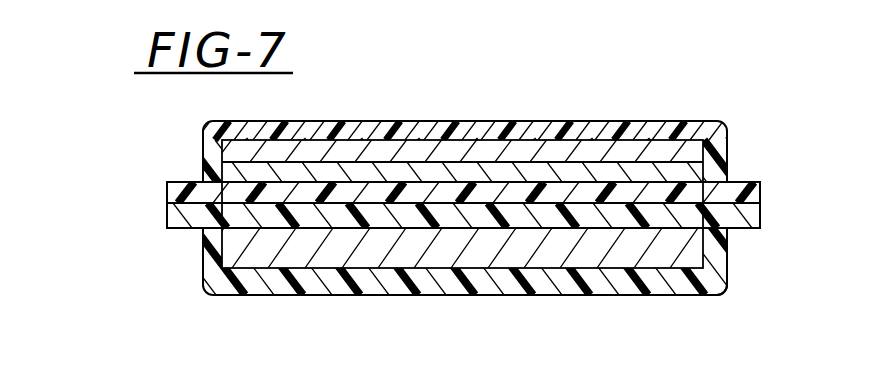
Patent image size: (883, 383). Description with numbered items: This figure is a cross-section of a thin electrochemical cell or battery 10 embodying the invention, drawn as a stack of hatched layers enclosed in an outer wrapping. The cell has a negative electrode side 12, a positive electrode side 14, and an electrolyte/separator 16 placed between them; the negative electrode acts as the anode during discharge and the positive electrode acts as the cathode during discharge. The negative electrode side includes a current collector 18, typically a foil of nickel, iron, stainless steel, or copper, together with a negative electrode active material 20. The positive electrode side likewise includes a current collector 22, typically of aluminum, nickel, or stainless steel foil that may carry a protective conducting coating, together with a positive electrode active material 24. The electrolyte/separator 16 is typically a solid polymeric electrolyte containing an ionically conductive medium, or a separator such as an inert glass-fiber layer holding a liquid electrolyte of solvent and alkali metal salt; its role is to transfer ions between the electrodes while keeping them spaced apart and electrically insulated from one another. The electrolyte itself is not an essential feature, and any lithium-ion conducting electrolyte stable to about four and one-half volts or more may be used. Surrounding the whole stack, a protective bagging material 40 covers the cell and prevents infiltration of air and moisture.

The electrochemical cell or battery 10 is at (748, 121).
The negative electrode side 12 is at (433, 131).
The positive electrode side 14 is at (313, 294).
The electrolyte/separator 16 is at (664, 191).
The current collector 18 is at (583, 147).
The negative electrode active material 20 is at (228, 170).
The current collector 22 is at (237, 248).
The positive electrode active material 24 is at (681, 218).
The protective bagging material 40 is at (709, 289).